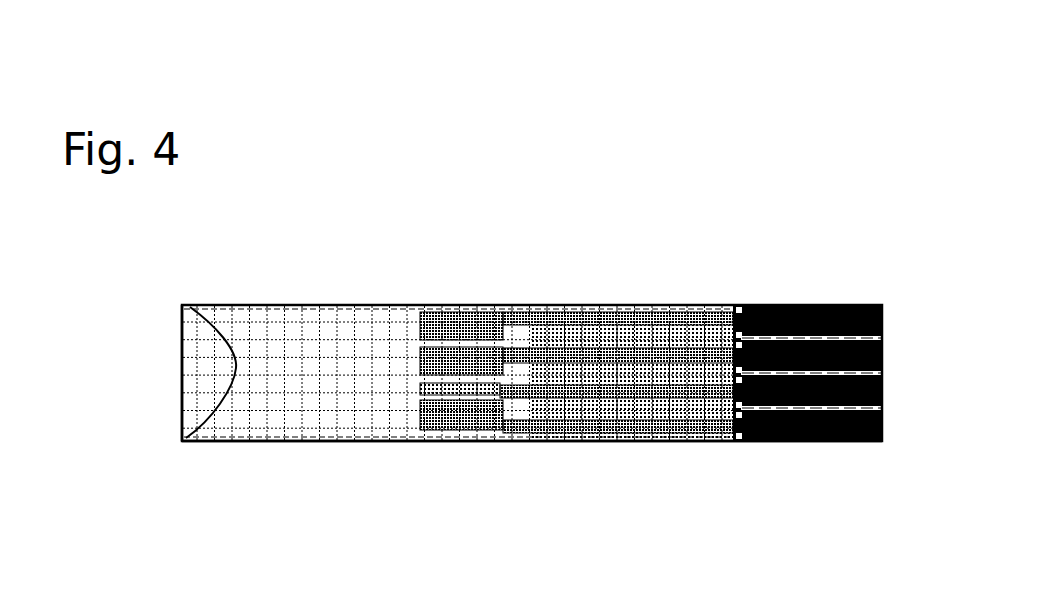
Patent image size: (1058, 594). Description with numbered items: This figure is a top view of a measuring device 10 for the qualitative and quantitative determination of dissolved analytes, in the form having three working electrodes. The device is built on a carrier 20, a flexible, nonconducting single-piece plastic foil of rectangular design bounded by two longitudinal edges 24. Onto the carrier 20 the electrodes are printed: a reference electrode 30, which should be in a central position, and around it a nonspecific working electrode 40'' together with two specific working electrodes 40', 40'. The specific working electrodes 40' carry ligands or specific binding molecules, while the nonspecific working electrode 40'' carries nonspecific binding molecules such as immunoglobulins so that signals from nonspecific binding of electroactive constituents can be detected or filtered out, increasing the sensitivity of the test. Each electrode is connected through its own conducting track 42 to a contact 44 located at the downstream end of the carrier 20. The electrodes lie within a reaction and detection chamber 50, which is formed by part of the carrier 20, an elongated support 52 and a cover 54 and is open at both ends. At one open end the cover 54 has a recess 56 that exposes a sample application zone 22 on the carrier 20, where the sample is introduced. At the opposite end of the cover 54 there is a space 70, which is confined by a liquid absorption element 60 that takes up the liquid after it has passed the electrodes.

The measuring device 10 is at (160, 282).
The carrier 20 is at (738, 437).
The sample application zone 22 is at (198, 443).
The longitudinal edges 24 is at (653, 442).
The reference electrode 30 is at (443, 390).
The specific working electrode 40' is at (448, 376).
The nonspecific working electrode 40'' is at (461, 271).
The conducting track 42 is at (605, 316).
The contact 44 is at (808, 305).
The reaction and detection chamber 50 is at (266, 312).
The elongated support 52 is at (296, 438).
The cover 54 is at (252, 437).
The recess 56 is at (218, 303).
The liquid absorption element 60 is at (687, 408).
The space 70 is at (533, 305).